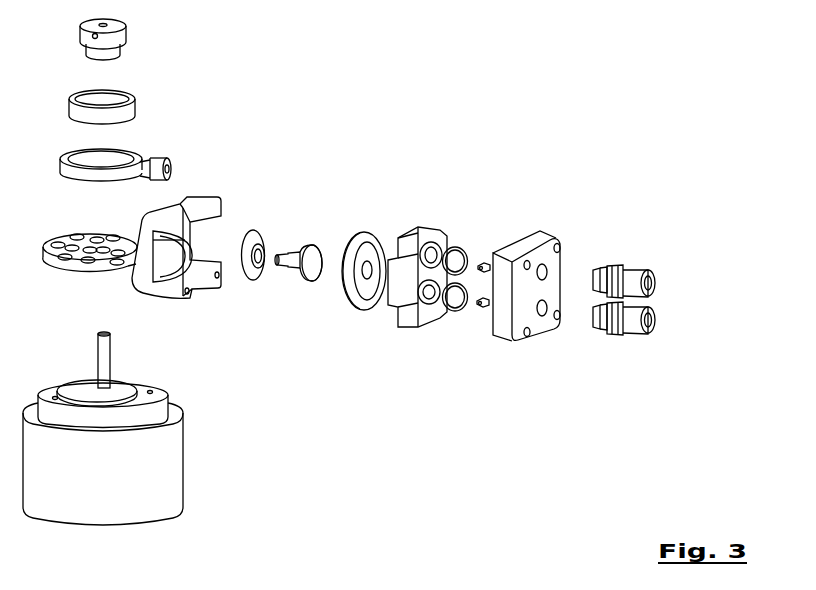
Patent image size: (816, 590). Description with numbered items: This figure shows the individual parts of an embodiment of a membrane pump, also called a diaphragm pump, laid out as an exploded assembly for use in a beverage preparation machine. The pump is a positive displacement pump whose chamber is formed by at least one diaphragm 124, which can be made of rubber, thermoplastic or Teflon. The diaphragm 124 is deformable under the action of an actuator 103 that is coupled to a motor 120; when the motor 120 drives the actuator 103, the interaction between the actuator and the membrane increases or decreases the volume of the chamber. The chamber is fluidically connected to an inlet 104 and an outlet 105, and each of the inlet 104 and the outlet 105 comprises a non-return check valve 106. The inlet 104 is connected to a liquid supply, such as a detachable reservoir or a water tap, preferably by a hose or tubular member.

The actuator 103 is at (165, 165).
The inlet 104 is at (637, 278).
The outlet 105 is at (635, 322).
The non-return check valve 106 is at (490, 260).
The motor 120 is at (162, 465).
The diaphragm 124 is at (380, 237).